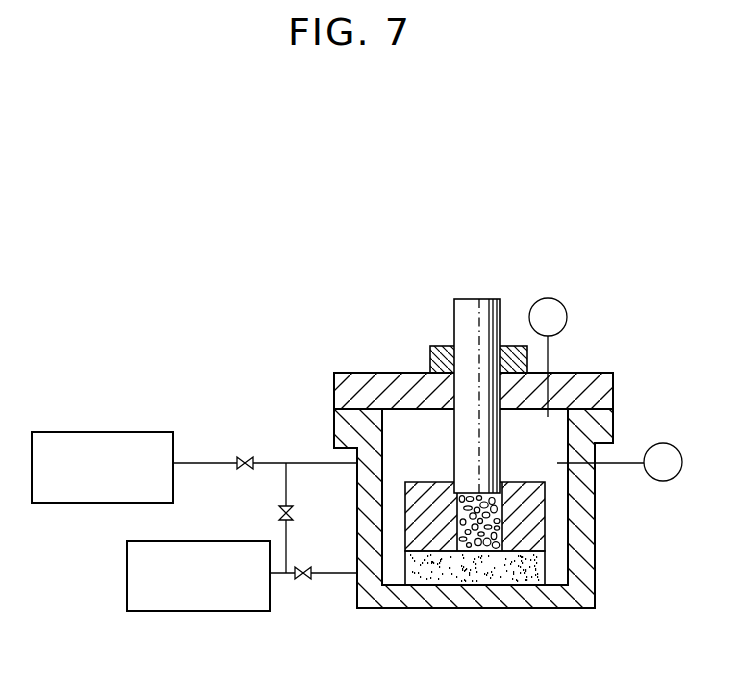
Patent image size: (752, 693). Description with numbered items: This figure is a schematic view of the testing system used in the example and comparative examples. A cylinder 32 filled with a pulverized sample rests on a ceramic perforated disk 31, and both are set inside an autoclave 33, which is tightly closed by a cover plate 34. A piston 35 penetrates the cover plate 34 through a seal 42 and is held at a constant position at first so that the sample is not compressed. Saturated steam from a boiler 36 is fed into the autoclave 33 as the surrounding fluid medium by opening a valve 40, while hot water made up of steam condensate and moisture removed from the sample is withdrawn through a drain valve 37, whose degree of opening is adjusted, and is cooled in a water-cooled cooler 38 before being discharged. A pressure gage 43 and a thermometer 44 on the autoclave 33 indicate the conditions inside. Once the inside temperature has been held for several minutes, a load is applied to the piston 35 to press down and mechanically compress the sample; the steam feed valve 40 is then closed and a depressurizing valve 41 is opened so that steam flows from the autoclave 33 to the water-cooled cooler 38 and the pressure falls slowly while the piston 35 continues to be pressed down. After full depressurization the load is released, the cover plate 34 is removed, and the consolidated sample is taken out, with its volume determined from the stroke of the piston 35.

The ceramic perforated disk 31 is at (468, 568).
The cylinder 32 is at (528, 540).
The autoclave 33 is at (595, 527).
The cover plate 34 is at (593, 373).
The piston 35 is at (500, 309).
The boiler 36 is at (138, 432).
The drain valve 37 is at (303, 581).
The water-cooled cooler 38 is at (206, 612).
The valve 40 is at (245, 456).
The depressurizing valve 41 is at (278, 511).
The seal 42 is at (437, 346).
The pressure gage 43 is at (566, 312).
The thermometer 44 is at (663, 443).